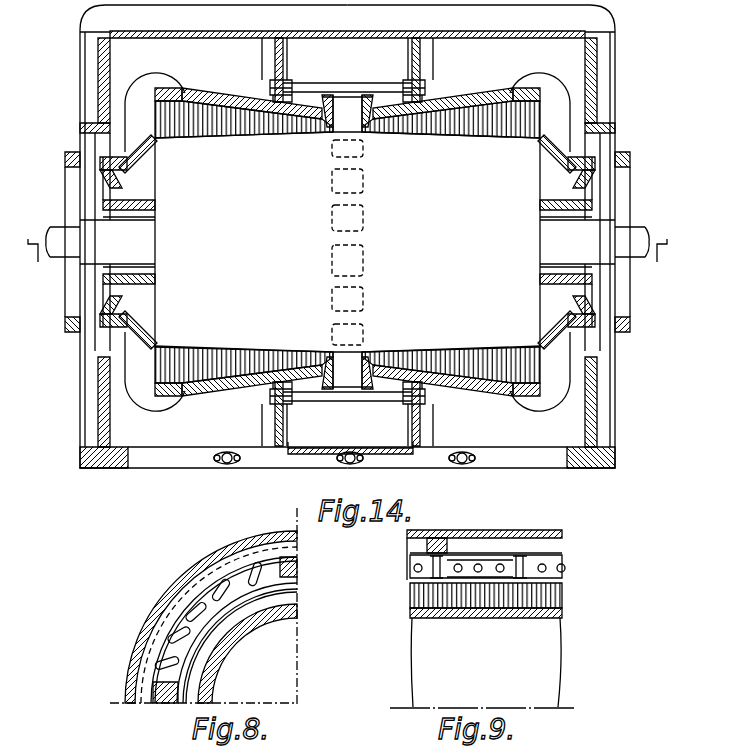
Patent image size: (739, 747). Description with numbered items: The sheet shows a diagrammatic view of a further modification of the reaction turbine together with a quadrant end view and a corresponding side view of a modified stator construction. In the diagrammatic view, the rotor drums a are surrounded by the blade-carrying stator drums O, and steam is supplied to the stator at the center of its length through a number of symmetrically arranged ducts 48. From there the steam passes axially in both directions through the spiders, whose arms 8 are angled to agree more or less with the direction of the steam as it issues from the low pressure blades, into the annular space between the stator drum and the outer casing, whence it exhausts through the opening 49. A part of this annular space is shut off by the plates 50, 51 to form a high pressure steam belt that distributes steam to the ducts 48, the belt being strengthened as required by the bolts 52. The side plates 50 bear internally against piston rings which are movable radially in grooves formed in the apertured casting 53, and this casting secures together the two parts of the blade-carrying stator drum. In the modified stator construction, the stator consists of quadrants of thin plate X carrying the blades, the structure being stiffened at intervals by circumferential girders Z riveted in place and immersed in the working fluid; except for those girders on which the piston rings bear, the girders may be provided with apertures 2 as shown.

In FIG. 14, the arms of the spider 8 is at (137, 110).
In FIG. 14, the ducts 48 is at (363, 188).
In FIG. 14, the opening 49 is at (188, 457).
In FIG. 14, the side plates 50 is at (276, 59).
In FIG. 14, the plates 51 is at (352, 31).
In FIG. 14, the bolts 52 is at (366, 84).
In FIG. 14, the apertured casting 53 is at (330, 106).
In FIG. 14, the stator drums O is at (201, 100).
In FIG. 14, the rotor drums a is at (347, 242).
In FIG. 8, the rotor drums a is at (247, 617).
In FIG. 9, the rotor drums a is at (470, 612).
In FIG. 8, the apertures 2 is at (198, 608).
In FIG. 8, the circumferential girders Z is at (210, 600).
In FIG. 9, the circumferential girders Z is at (430, 572).
In FIG. 8, the thin plate quadrants X is at (251, 587).
In FIG. 9, the thin plate quadrants X is at (565, 583).